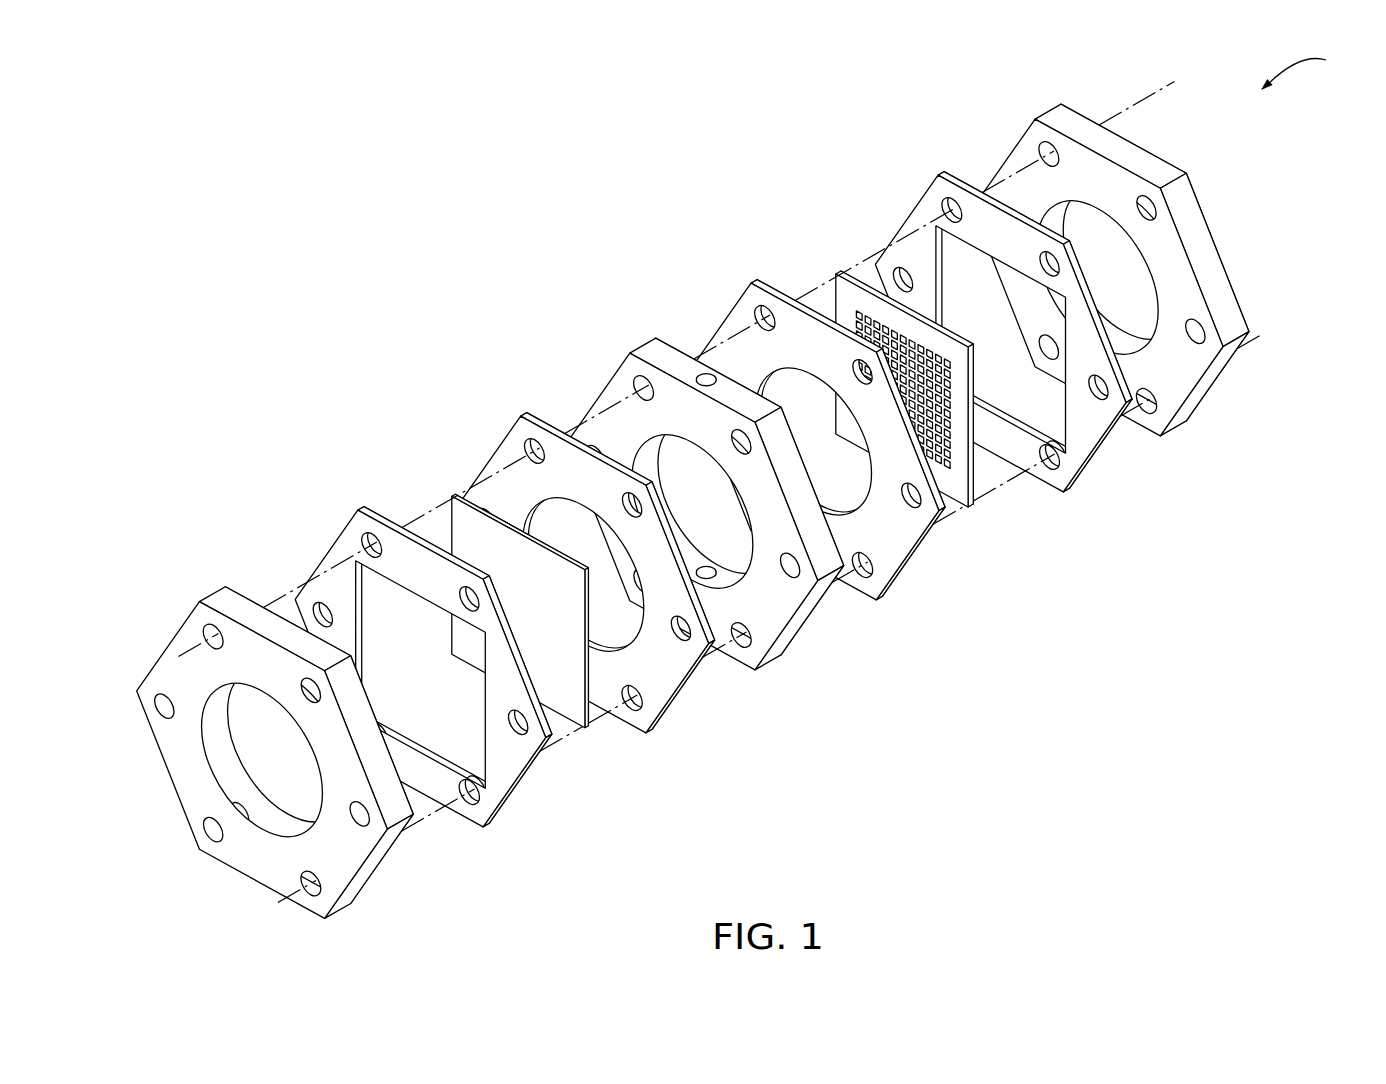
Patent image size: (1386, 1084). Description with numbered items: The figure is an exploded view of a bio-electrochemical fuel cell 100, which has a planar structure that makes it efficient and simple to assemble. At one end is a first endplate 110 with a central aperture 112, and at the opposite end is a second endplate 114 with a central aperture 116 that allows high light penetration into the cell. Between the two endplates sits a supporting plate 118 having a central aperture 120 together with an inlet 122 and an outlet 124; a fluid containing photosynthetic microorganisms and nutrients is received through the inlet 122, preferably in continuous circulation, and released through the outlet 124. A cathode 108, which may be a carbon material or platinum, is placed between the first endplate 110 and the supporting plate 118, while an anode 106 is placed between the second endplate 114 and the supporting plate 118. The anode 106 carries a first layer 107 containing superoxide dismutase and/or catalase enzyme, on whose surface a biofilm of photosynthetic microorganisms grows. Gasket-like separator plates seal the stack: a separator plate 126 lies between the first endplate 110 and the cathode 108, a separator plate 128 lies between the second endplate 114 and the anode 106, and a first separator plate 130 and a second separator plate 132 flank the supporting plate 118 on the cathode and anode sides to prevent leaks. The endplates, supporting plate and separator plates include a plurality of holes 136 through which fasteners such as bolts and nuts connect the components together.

The bio-electrochemical fuel cell 100 is at (1315, 69).
The anode 106 is at (964, 438).
The first layer 107 is at (940, 450).
The cathode 108 is at (577, 727).
The first endplate 110 is at (231, 868).
The central aperture 112 is at (214, 690).
The second endplate 114 is at (1187, 358).
The central aperture 116 is at (1157, 283).
The supporting plate 118 is at (628, 362).
The central aperture 120 is at (647, 433).
The inlet 122 is at (706, 370).
The outlet 124 is at (704, 570).
The separator plate 126 is at (333, 548).
The separator plate 128 is at (906, 220).
The first separator plate 130 is at (663, 675).
The second separator plate 132 is at (893, 560).
The holes 136 is at (914, 205).